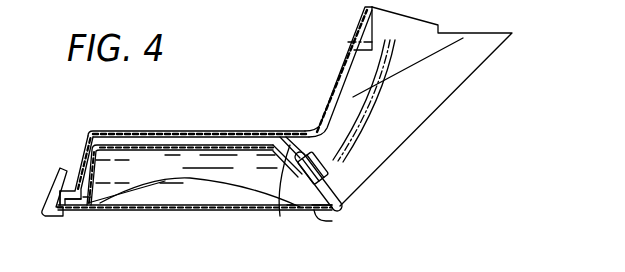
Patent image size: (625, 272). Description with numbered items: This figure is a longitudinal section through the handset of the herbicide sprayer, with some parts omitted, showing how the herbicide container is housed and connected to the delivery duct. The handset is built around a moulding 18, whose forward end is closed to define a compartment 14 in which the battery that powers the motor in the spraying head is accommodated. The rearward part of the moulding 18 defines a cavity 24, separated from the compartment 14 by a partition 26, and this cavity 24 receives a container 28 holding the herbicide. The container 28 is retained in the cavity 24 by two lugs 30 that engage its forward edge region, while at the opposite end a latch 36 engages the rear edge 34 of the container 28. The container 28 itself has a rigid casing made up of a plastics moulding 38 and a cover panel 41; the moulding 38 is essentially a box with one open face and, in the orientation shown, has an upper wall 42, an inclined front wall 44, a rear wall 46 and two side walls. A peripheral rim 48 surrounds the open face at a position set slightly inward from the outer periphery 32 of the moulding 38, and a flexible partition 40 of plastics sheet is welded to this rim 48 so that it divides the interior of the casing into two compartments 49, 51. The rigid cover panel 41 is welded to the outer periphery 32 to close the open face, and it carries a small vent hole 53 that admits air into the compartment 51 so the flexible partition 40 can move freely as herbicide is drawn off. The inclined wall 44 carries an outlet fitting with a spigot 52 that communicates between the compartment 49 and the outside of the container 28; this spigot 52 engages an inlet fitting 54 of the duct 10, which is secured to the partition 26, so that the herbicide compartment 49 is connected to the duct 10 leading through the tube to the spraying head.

The duct 10 is at (363, 113).
The compartment 14 is at (409, 112).
The moulding 18 is at (193, 131).
The cavity 24 is at (118, 136).
The partition 26 is at (302, 143).
The container 28 is at (100, 145).
The lugs 30 is at (332, 221).
The outer periphery 32 is at (340, 207).
The rear edge 34 is at (75, 206).
The latch 36 is at (43, 203).
The plastics moulding 38 is at (157, 133).
The flexible partition 40 is at (257, 210).
The cover panel 41 is at (187, 190).
The upper wall 42 is at (243, 147).
The inclined front wall 44 is at (291, 210).
The rear wall 46 is at (106, 186).
The peripheral rim 48 is at (86, 193).
The compartment 49 is at (110, 165).
The compartment 51 is at (168, 192).
The spigot 52 is at (295, 150).
The vent hole 53 is at (250, 212).
The inlet fitting 54 is at (328, 166).